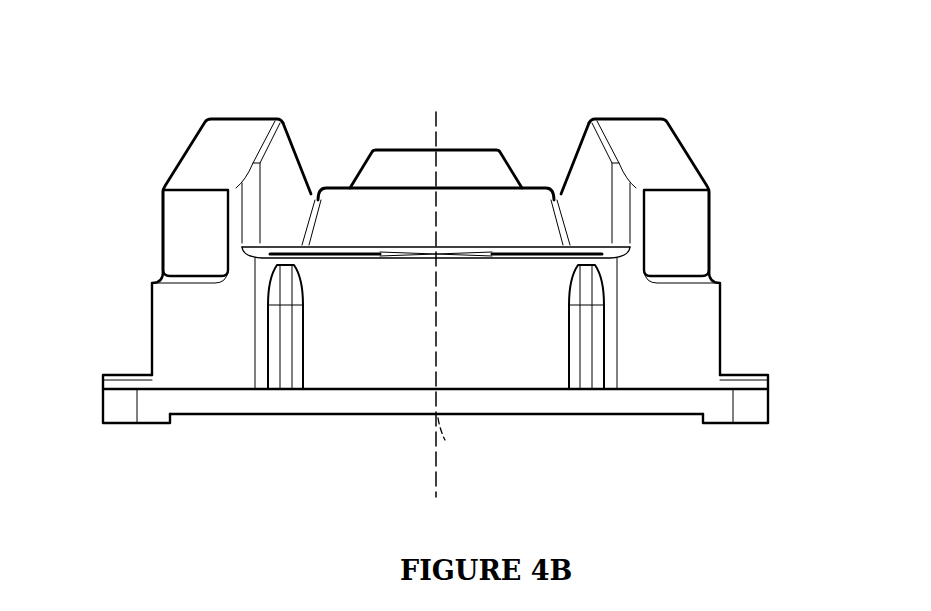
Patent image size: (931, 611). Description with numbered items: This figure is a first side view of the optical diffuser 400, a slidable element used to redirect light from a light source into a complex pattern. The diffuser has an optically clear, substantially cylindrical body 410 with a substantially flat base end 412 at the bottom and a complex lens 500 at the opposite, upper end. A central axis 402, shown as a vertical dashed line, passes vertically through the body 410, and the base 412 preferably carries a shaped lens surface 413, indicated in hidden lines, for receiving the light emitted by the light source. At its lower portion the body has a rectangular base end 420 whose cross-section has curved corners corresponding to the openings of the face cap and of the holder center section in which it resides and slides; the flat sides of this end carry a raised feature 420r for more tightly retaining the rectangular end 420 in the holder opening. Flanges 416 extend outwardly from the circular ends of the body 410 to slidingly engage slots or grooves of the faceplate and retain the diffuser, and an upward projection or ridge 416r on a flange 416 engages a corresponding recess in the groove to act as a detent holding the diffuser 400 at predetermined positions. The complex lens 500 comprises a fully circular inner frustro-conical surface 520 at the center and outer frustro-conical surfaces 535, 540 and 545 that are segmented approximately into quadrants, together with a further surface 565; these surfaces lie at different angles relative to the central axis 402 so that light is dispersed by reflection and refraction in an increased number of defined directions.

The complex lens 500 is at (644, 87).
The segmented frustro-conical surface 535 is at (303, 150).
The segmented frustro-conical surface 540 is at (210, 148).
The segmented frustro-conical surface 545 is at (187, 232).
The inner frustro-conical surface 520 is at (384, 164).
The frustro-conical surface 565 is at (512, 218).
The optical diffuser 400 is at (255, 494).
The cylindrical body 410 is at (153, 310).
The rectangular base end 420 is at (695, 320).
The raised feature 420r is at (580, 345).
The flange 416 is at (103, 410).
The upward projection or ridge 416r is at (113, 375).
The flat base end 412 is at (543, 417).
The central axis 402 is at (434, 462).
The shaped lens surface 413 is at (438, 418).